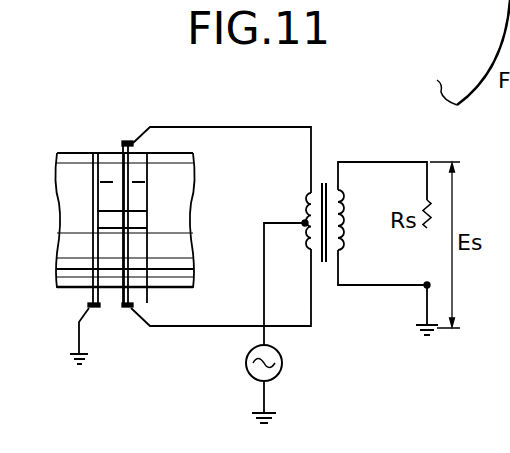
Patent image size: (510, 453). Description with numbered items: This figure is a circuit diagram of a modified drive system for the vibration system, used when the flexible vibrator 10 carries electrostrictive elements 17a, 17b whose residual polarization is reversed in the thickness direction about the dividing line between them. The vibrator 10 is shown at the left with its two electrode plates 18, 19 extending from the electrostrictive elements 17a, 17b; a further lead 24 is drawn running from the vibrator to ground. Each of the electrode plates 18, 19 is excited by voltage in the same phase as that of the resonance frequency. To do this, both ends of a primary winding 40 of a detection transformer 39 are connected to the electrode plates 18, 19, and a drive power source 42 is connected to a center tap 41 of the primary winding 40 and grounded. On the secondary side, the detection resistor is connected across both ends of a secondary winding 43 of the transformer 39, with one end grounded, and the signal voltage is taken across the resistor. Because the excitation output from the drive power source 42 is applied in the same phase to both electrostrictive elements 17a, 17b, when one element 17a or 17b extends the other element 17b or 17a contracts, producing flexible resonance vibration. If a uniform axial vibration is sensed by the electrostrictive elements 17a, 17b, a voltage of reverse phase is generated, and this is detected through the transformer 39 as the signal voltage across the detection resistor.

The flexible vibrator 10 is at (70, 166).
The electrostrictive element 17a is at (110, 167).
The electrostrictive element 17b is at (113, 290).
The electrode plate 18 is at (121, 140).
The electrode plate 19 is at (125, 311).
The electrode lead 24 is at (88, 297).
The detection transformer 39 is at (325, 182).
The primary winding 40 is at (310, 200).
The center tap 41 is at (304, 221).
The drive power source 42 is at (280, 357).
The secondary winding 43 is at (343, 212).